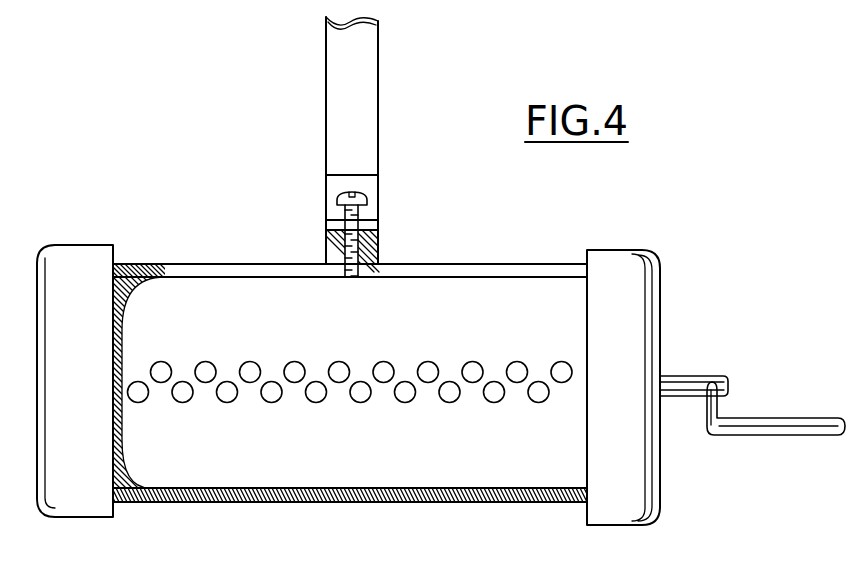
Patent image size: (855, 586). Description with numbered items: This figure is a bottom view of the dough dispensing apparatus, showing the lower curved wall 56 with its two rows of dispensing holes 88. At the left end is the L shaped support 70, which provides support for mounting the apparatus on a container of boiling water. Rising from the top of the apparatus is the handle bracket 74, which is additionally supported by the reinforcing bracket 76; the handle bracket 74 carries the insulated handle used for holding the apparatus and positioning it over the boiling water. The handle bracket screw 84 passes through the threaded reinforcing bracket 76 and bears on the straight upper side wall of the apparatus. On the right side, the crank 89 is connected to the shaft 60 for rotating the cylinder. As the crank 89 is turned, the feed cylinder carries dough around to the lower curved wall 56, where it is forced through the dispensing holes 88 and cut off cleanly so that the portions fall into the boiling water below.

The lower curved wall 56 is at (242, 320).
The shaft 60 is at (683, 378).
The L shaped support 70 is at (86, 283).
The handle bracket 74 is at (335, 52).
The reinforcing bracket 76 is at (333, 212).
The handle bracket screw 84 is at (345, 195).
The dispensing holes 88 is at (384, 365).
The crank 89 is at (750, 422).